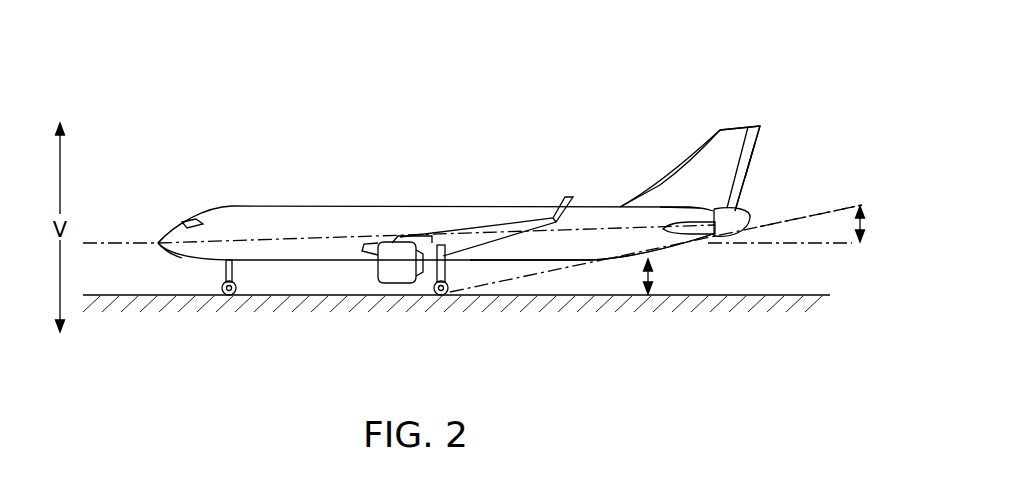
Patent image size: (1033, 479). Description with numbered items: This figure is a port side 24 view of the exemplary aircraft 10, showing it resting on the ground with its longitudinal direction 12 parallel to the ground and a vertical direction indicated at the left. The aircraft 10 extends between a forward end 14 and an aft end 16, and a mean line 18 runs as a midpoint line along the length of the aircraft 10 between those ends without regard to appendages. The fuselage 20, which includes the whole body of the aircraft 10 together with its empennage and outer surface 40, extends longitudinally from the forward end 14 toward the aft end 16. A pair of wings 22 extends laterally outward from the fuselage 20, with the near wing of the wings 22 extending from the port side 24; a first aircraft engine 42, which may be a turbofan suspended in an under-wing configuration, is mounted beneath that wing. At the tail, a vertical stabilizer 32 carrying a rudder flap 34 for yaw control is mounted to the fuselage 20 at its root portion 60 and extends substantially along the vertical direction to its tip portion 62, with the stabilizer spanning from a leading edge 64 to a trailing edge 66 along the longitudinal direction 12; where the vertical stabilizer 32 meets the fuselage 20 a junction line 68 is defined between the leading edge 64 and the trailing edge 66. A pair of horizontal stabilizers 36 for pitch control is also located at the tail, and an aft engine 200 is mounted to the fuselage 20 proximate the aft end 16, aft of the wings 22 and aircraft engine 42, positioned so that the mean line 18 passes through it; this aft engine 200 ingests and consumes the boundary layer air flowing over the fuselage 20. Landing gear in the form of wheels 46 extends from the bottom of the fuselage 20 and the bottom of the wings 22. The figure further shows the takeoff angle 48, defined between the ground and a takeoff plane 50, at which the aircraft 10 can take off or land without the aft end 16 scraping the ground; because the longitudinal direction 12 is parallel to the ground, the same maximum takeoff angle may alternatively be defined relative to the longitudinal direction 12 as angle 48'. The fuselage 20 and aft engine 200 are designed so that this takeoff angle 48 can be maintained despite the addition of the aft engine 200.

The aircraft 10 is at (210, 172).
The longitudinal direction 12 is at (102, 240).
The forward end 14 is at (163, 262).
The aft end 16 is at (772, 213).
The mean line 18 is at (279, 234).
The fuselage 20 is at (247, 256).
The wings 22 is at (511, 231).
The port side 24 is at (538, 258).
The vertical stabilizer 32 is at (713, 157).
The rudder flap 34 is at (759, 138).
The horizontal stabilizers 36 is at (708, 234).
The outer surface 40 is at (385, 192).
The first aircraft engine 42 is at (381, 293).
The wheels 46 is at (417, 298).
The takeoff angle 48 is at (666, 313).
The angle 48' is at (868, 262).
The takeoff plane 50 is at (557, 270).
The root portion 60 is at (678, 147).
The tip portion 62 is at (743, 115).
The leading edge 64 is at (678, 188).
The trailing edge 66 is at (763, 153).
The junction line 68 is at (637, 204).
The aft engine 200 is at (748, 198).